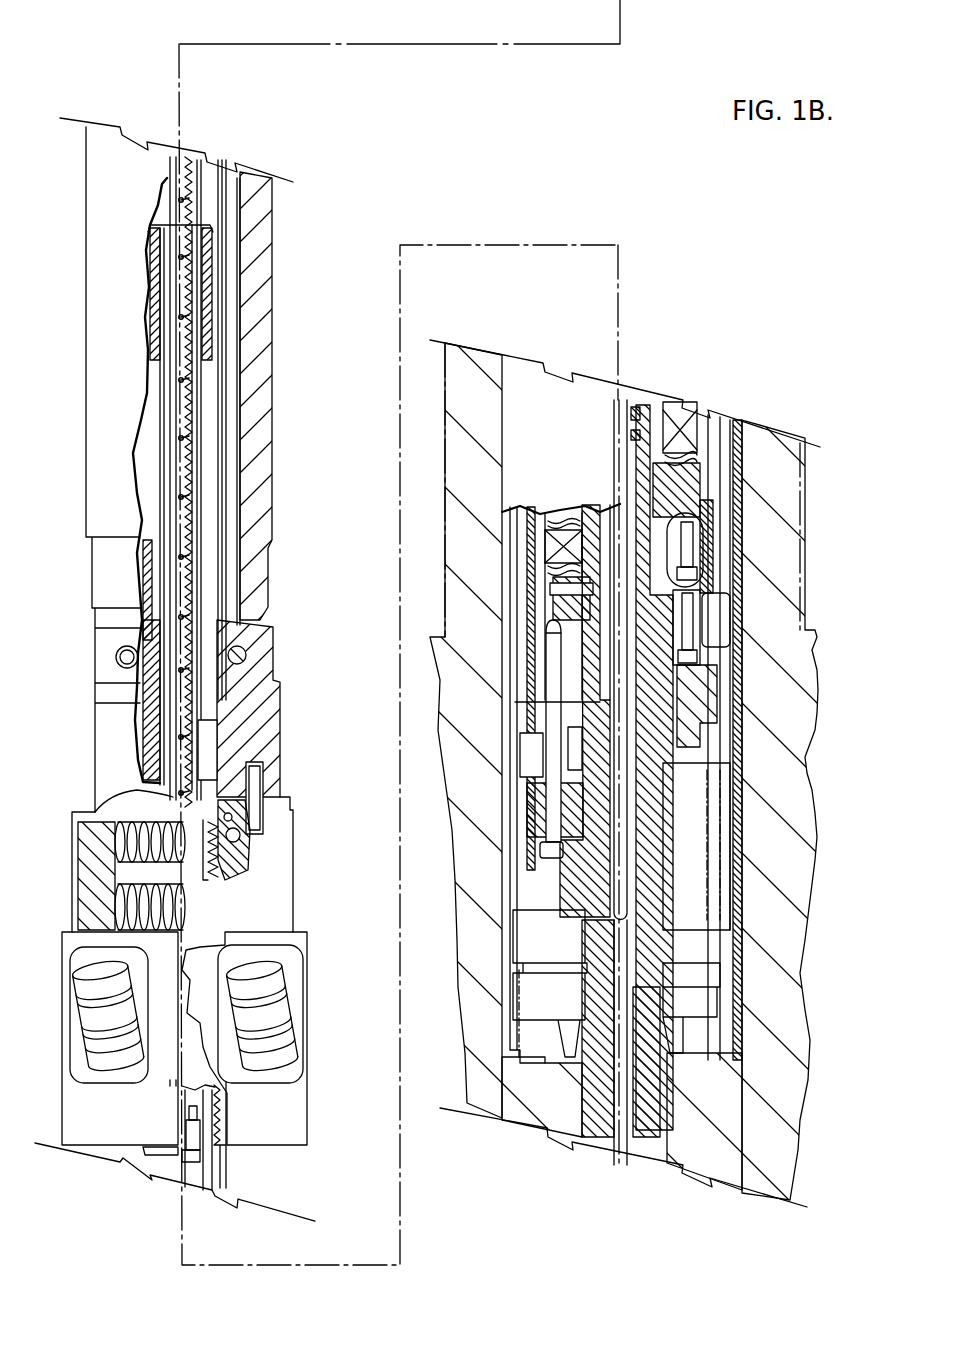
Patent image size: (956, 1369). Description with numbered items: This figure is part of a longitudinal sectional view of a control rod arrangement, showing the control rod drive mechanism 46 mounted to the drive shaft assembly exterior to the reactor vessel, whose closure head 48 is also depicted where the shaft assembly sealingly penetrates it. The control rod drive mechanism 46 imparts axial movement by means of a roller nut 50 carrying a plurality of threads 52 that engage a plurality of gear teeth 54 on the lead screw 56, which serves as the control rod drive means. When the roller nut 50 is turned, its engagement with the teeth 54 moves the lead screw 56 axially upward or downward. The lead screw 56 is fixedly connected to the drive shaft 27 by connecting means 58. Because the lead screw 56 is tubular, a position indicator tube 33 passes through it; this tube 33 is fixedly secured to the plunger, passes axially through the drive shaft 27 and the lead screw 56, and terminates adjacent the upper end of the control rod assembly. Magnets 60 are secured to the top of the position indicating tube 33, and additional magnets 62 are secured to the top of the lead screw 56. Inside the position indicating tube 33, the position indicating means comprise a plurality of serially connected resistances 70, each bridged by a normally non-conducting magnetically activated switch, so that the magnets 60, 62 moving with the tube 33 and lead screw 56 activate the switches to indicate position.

The drive shaft 27 is at (648, 1133).
The position indicator tube 33 is at (165, 378).
The control rod drive mechanism 46 is at (66, 593).
The closure head 48 is at (462, 933).
The roller nut 50 is at (278, 1044).
The threads 52 is at (286, 1006).
The gear teeth 54 is at (240, 860).
The lead screw 56 is at (268, 730).
The connecting means 58 is at (657, 580).
The magnets 60 is at (152, 270).
The magnets 62 is at (148, 560).
The resistances 70 is at (186, 405).